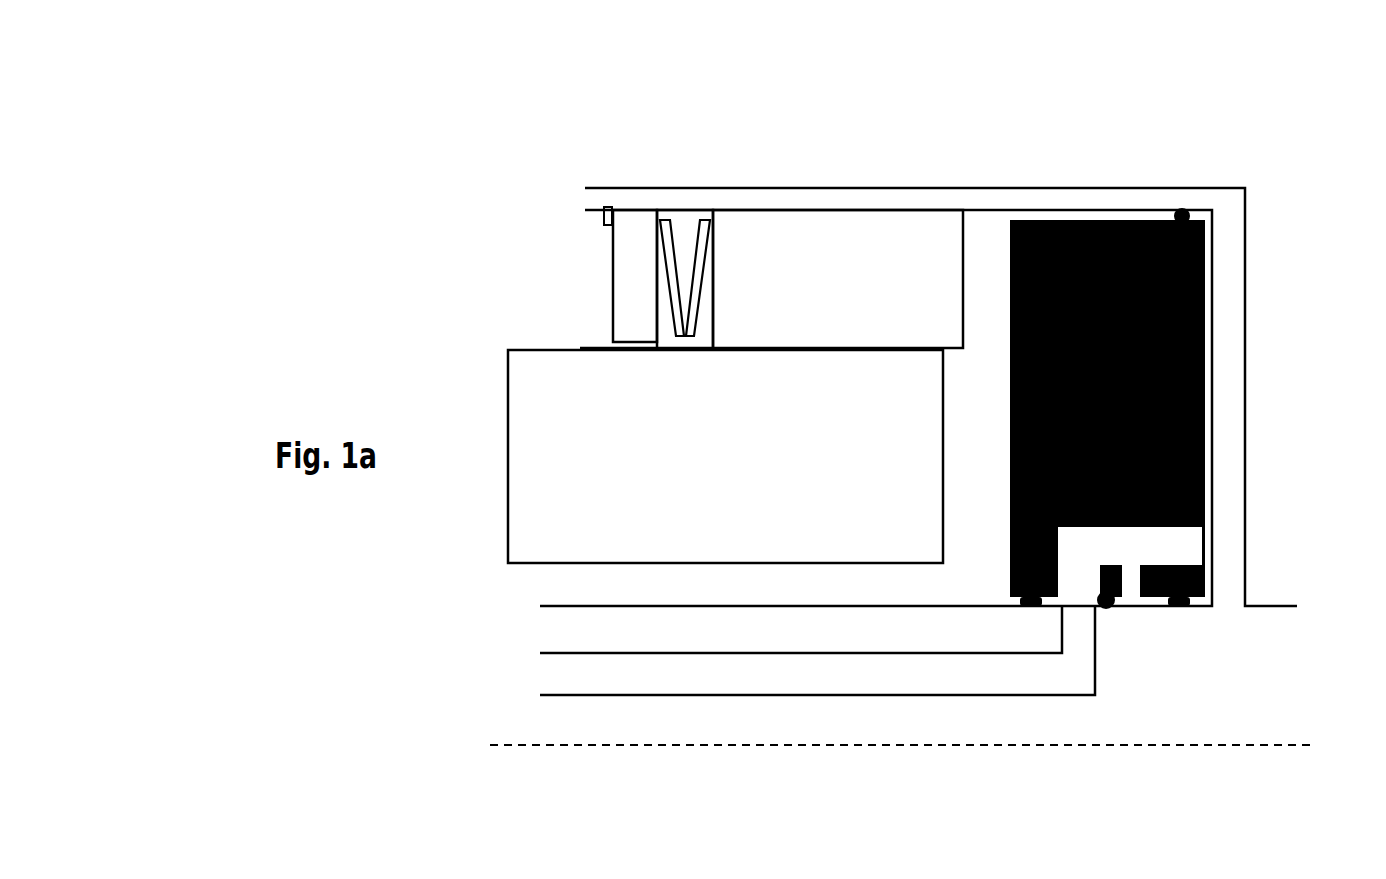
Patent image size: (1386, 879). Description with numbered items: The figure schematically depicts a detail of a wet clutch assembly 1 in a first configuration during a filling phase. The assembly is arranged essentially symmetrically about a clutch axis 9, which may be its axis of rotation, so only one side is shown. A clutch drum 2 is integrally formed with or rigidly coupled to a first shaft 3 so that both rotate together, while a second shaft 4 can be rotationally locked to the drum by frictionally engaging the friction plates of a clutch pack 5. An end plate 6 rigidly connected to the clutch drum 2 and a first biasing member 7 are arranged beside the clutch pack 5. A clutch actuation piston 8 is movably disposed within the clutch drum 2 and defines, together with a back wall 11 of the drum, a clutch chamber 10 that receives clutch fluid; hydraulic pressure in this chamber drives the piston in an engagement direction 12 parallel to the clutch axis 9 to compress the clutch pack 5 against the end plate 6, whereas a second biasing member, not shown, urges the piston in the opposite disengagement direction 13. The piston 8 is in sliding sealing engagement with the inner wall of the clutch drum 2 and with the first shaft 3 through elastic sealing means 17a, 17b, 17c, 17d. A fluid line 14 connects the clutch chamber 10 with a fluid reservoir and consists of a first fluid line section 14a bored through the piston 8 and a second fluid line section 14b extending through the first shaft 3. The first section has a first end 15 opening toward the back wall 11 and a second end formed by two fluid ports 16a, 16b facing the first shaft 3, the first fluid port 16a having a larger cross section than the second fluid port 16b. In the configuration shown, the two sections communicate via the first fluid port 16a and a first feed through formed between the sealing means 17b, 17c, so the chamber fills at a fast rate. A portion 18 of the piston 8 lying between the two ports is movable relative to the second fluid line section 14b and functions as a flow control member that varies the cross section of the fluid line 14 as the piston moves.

The wet clutch assembly 1 is at (300, 178).
The clutch drum 2 is at (1247, 240).
The first shaft 3 is at (1305, 683).
The second shaft 4 is at (560, 490).
The clutch pack 5 is at (845, 296).
The end plate 6 is at (650, 289).
The first biasing member 7 is at (683, 340).
The clutch actuation piston 8 is at (1168, 408).
The clutch axis 9 is at (503, 747).
The clutch chamber 10 is at (1205, 317).
The back wall 11 is at (1247, 385).
The engagement direction 12 is at (942, 77).
The disengagement direction 13 is at (1017, 120).
The fluid line 14 is at (550, 652).
The first fluid line section 14a is at (1100, 566).
The second fluid line section 14b is at (717, 652).
The first end 15 is at (1207, 547).
The first fluid port 16a is at (1083, 606).
The second fluid port 16b is at (1135, 606).
The sealing means 17a is at (1182, 210).
The sealing means 17b is at (1040, 606).
The sealing means 17c is at (1105, 607).
The sealing means 17d is at (1177, 607).
The portion of the clutch actuation piston 18 is at (1128, 565).